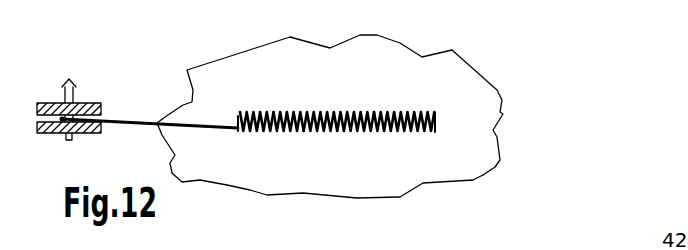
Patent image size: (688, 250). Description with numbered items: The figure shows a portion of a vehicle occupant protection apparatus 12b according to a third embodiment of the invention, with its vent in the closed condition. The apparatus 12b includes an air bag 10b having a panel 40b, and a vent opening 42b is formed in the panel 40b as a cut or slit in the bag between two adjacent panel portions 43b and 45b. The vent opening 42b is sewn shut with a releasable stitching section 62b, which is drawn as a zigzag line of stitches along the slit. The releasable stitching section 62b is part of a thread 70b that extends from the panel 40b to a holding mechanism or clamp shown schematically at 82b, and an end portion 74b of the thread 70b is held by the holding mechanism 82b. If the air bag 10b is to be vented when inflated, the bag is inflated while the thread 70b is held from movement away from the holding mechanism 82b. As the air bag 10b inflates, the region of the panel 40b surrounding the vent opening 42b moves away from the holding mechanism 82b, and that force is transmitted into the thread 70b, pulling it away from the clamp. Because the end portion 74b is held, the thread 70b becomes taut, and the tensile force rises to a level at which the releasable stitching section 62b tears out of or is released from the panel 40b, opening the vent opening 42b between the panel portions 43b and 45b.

The vehicle occupant protection apparatus 12b is at (536, 68).
The air bag 10b is at (470, 171).
The panel 40b is at (480, 115).
The holding mechanism 82b is at (118, 93).
The end portion of the thread 74b is at (83, 133).
The thread 70b is at (216, 100).
The panel portion 43b is at (275, 102).
The vent opening 42b is at (287, 132).
The releasable stitching section 62b is at (306, 112).
The panel portion 45b is at (383, 138).